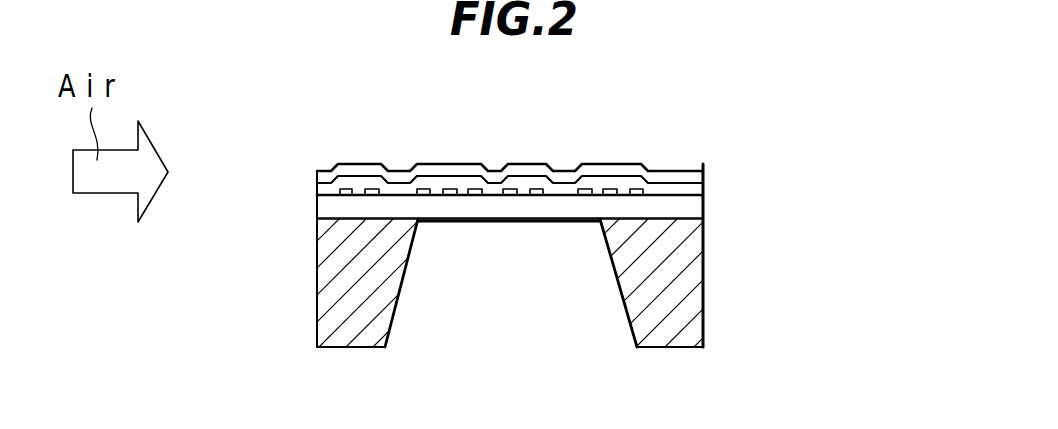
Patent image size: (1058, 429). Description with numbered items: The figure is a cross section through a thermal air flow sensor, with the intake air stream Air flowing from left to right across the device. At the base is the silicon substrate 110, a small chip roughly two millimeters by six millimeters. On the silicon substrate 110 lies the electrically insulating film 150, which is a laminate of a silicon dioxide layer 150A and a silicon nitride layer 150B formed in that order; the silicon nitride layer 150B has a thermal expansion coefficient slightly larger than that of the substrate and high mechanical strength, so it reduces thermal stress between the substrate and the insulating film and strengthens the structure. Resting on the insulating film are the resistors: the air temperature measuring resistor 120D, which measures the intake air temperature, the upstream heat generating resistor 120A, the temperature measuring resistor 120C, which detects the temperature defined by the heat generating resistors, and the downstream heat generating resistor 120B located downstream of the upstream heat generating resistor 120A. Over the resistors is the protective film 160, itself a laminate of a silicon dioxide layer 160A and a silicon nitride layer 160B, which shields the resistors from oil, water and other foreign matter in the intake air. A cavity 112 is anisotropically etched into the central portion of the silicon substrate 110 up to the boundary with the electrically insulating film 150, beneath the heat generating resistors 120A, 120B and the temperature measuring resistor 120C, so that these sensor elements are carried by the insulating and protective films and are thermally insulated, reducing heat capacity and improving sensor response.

The silicon substrate 110 is at (327, 293).
The cavity 112 is at (512, 298).
The upstream heat generating resistor 120A is at (449, 187).
The downstream heat generating resistor 120B is at (614, 187).
The temperature measuring resistor 120C is at (516, 187).
The air temperature measuring resistor 120D is at (348, 188).
The electrically insulating film 150 is at (625, 226).
The silicon dioxide layer 150A is at (703, 218).
The silicon nitride layer 150B is at (703, 200).
The protective film 160 is at (625, 151).
The silicon dioxide layer 160A is at (703, 188).
The silicon nitride layer 160B is at (703, 172).